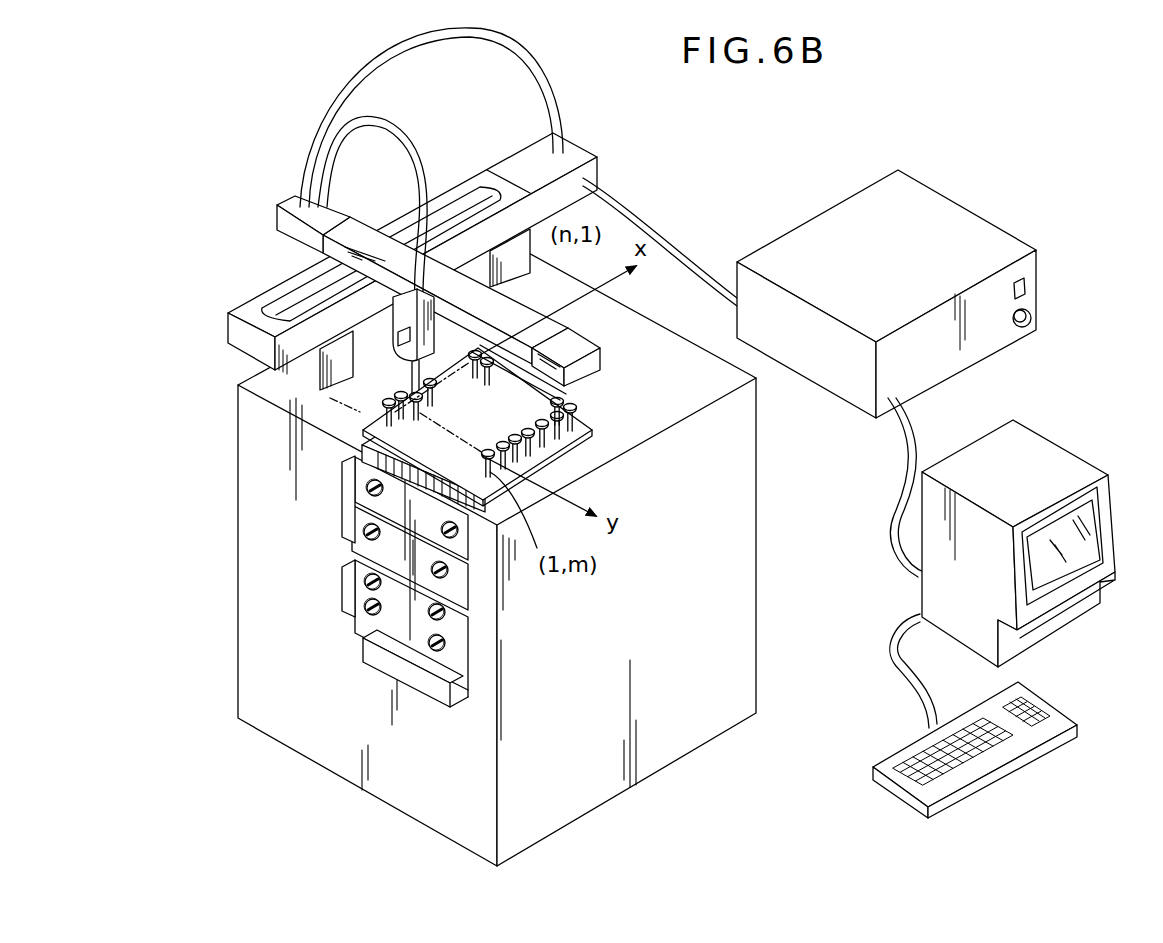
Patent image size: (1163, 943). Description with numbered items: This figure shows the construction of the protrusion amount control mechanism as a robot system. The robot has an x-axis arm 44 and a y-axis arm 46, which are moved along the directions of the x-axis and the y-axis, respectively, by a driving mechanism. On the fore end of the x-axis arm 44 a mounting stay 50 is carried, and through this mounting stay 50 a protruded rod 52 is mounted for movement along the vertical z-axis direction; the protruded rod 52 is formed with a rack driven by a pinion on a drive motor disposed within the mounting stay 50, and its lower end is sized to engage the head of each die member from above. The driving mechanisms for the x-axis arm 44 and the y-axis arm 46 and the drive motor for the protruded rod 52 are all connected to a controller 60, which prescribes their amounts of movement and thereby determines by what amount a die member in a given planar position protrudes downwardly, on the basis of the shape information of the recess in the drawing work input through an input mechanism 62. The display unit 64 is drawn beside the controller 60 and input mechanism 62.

The x-axis arm 44 is at (572, 331).
The y-axis arm 46 is at (232, 326).
The mounting stay 50 is at (393, 313).
The protruded rod 52 is at (549, 246).
The controller 60 is at (972, 228).
The input mechanism 62 is at (1045, 737).
The display monitor 64 is at (1048, 458).